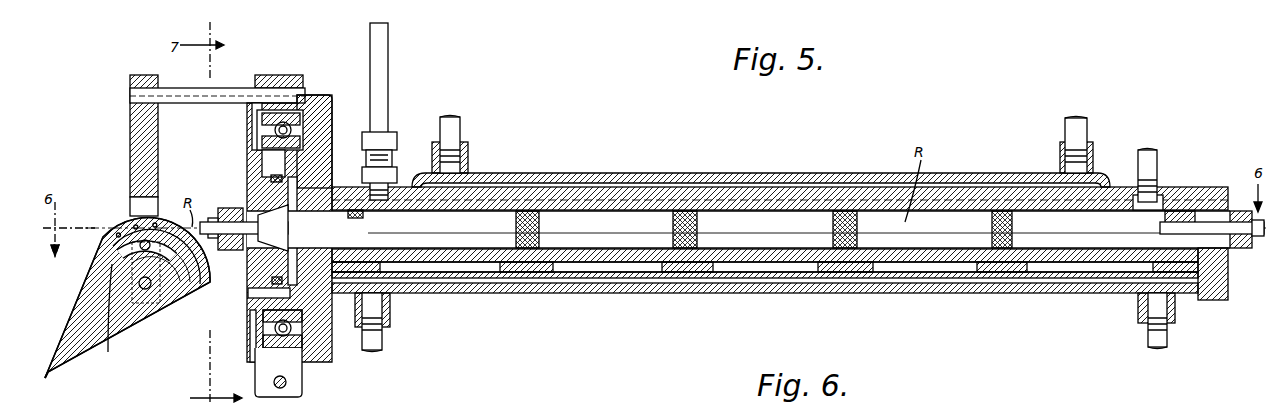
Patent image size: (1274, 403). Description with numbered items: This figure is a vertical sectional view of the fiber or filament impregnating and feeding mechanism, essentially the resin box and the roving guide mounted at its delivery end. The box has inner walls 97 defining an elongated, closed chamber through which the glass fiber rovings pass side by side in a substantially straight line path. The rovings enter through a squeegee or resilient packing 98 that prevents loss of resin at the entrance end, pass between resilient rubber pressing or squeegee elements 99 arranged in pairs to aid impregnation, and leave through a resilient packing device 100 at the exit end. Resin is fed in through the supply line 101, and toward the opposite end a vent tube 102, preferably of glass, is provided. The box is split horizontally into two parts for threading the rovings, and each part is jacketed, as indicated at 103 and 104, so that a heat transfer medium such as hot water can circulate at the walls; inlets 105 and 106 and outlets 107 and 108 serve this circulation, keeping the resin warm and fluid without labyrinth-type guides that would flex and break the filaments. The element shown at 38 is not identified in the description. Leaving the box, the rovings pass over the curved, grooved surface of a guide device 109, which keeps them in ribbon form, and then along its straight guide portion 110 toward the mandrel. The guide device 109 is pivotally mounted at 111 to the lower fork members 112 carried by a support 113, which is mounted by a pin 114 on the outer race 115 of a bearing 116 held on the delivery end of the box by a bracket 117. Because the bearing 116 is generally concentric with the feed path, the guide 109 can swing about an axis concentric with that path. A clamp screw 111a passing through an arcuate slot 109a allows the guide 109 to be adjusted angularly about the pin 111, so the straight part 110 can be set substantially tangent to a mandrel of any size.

The inner tube 38 is at (752, 294).
The inner walls 97 is at (712, 190).
The squeegee or resilient packing 98 is at (1240, 210).
The pressing or squeegee elements 99 is at (672, 234).
The resilient packing device 100 is at (230, 208).
The supply line 101 is at (1147, 150).
The vent tube 102 is at (389, 55).
The jacket 103 is at (652, 173).
The jacket 104 is at (560, 293).
The inlet 105 is at (1076, 118).
The inlet 106 is at (1146, 338).
The outlet 107 is at (462, 134).
The outlet 108 is at (383, 336).
The guide device 109 is at (150, 330).
The arcuate slot 109a is at (113, 300).
The straight guide portion 110 is at (80, 362).
The pivot mounting 111 is at (162, 305).
The clamp screw 111a is at (103, 237).
The lower fork members 112 is at (140, 205).
The support 113 is at (130, 118).
The pin 114 is at (231, 88).
The outer race 115 is at (283, 112).
The bearing 116 is at (322, 112).
The bracket 117 is at (318, 152).